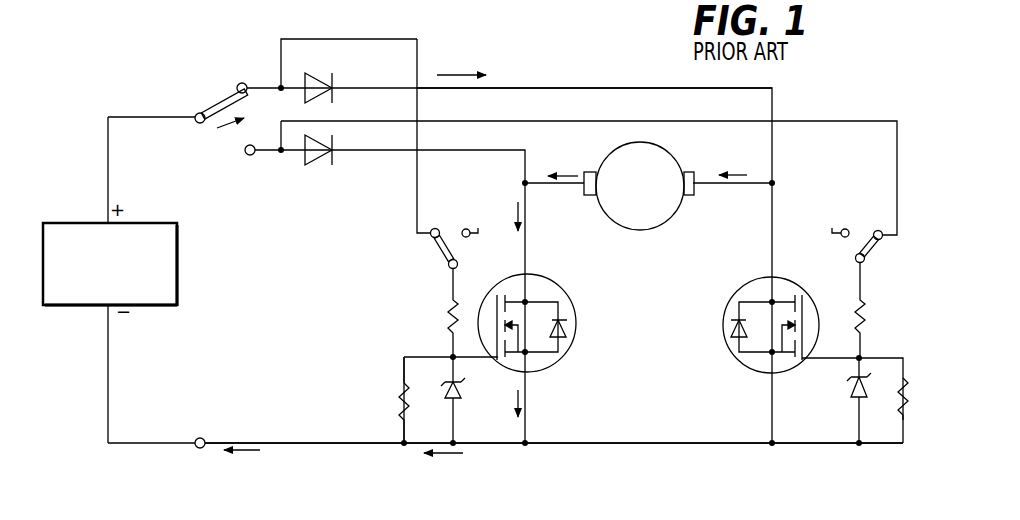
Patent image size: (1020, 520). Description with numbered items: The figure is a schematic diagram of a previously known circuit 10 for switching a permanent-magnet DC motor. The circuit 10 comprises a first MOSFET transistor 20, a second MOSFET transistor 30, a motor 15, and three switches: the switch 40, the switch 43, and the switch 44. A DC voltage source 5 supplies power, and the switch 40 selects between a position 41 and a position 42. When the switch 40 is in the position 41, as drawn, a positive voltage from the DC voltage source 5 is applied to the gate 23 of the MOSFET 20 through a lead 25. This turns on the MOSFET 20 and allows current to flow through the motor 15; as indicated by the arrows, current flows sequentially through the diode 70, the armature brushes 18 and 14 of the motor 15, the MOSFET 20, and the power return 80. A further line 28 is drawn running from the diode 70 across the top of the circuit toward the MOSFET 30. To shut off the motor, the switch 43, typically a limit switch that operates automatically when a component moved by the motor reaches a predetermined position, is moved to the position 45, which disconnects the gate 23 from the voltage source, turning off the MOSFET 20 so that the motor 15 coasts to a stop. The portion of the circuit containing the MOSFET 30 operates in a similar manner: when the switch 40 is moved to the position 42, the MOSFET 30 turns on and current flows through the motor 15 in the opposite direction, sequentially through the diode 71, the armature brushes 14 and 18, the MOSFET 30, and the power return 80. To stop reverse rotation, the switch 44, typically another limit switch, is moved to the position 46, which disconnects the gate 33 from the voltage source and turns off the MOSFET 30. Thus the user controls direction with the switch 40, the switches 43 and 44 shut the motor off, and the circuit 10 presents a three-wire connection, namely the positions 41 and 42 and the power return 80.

The DC voltage source 5 is at (177, 288).
The circuit 10 is at (686, 465).
The armature brush 14 is at (593, 171).
The motor 15 is at (655, 228).
The armature brush 18 is at (691, 171).
The first MOSFET transistor 20 is at (552, 362).
The gate 23 is at (455, 362).
The lead 25 is at (418, 62).
The supply line 28 is at (650, 85).
The second MOSFET transistor 30 is at (788, 363).
The gate 33 is at (833, 355).
The switch 40 is at (201, 124).
The position 41 is at (245, 83).
The position 42 is at (248, 156).
The switch 43 is at (459, 264).
The switch 44 is at (865, 259).
The position 45 is at (465, 228).
The position 46 is at (842, 229).
The diode 70 is at (334, 93).
The diode 71 is at (313, 158).
The power return 80 is at (200, 437).